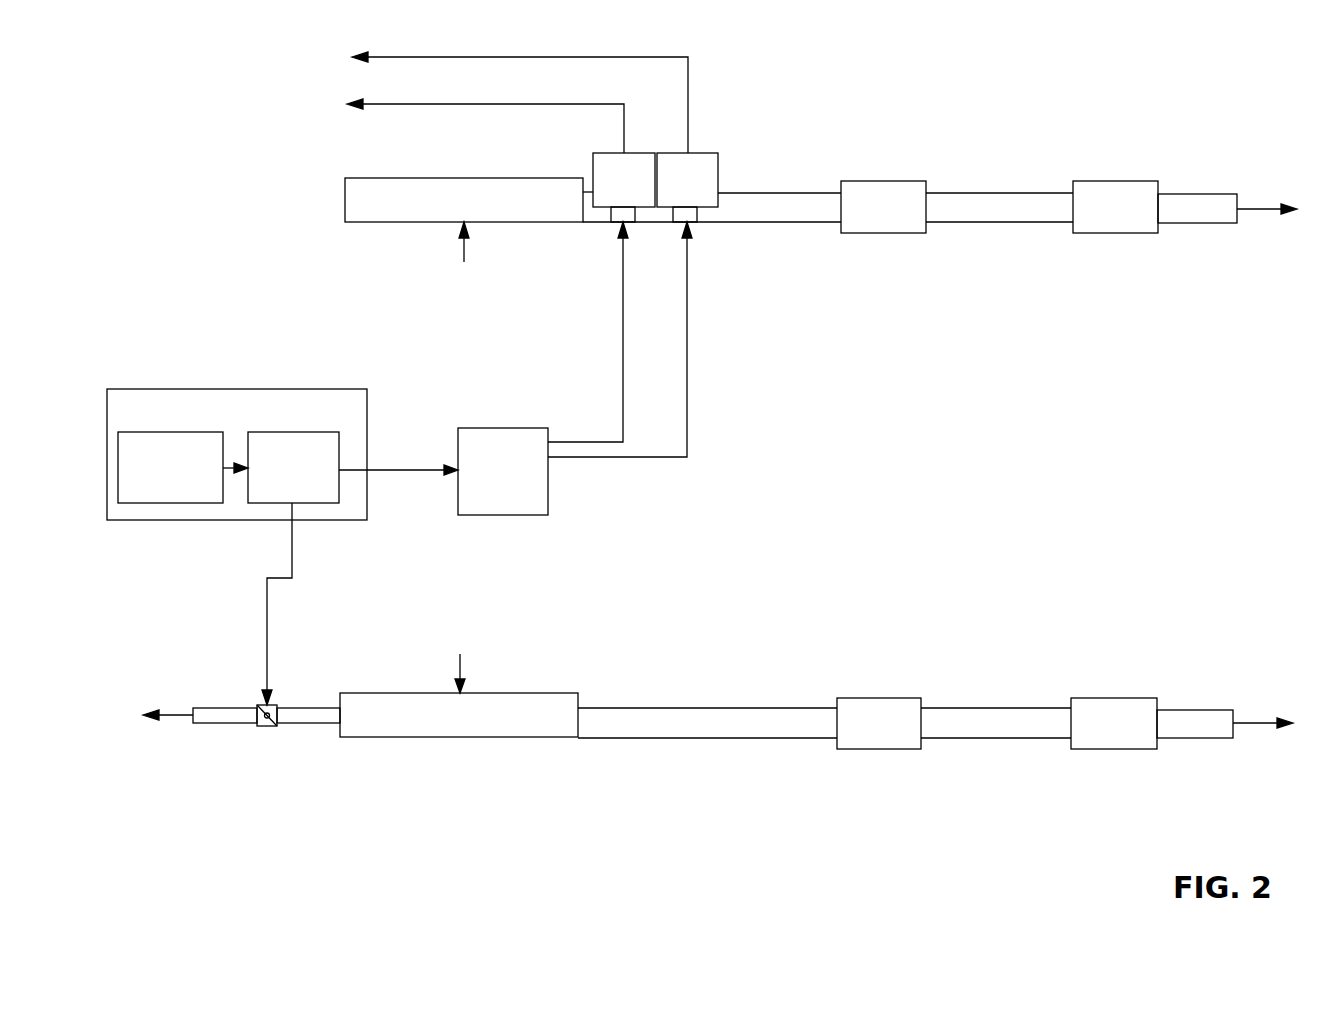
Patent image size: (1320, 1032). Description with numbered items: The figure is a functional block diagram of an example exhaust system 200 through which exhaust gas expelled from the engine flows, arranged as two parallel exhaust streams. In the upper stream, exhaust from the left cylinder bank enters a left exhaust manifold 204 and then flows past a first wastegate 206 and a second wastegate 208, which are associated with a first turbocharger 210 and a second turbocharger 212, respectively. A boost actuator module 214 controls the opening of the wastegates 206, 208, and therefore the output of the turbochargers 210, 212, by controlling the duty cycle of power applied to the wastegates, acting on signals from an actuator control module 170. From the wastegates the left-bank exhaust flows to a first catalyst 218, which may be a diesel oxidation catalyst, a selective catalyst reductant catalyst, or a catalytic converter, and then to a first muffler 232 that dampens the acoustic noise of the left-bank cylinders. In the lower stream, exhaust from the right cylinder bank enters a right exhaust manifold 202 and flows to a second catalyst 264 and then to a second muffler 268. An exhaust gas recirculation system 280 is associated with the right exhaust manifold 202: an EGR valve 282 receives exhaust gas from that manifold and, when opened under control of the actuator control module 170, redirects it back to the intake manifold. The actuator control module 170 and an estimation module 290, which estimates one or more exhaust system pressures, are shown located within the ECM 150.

The exhaust system 200 is at (825, 165).
The left exhaust manifold 204 is at (463, 178).
The first wastegate 206 is at (616, 222).
The second wastegate 208 is at (680, 222).
The first turbocharger 210 is at (605, 153).
The second turbocharger 212 is at (706, 153).
The boost actuator module 214 is at (502, 428).
The first catalyst 218 is at (885, 233).
The first muffler 232 is at (1118, 233).
The ECM 150 is at (238, 451).
The estimation module 290 is at (170, 503).
The actuator control module 170 is at (325, 503).
The exhaust gas recirculation (EGR) system 280 is at (718, 740).
The EGR valve 282 is at (267, 726).
The right exhaust manifold 202 is at (460, 737).
The second catalyst 264 is at (880, 749).
The second muffler 268 is at (1118, 749).